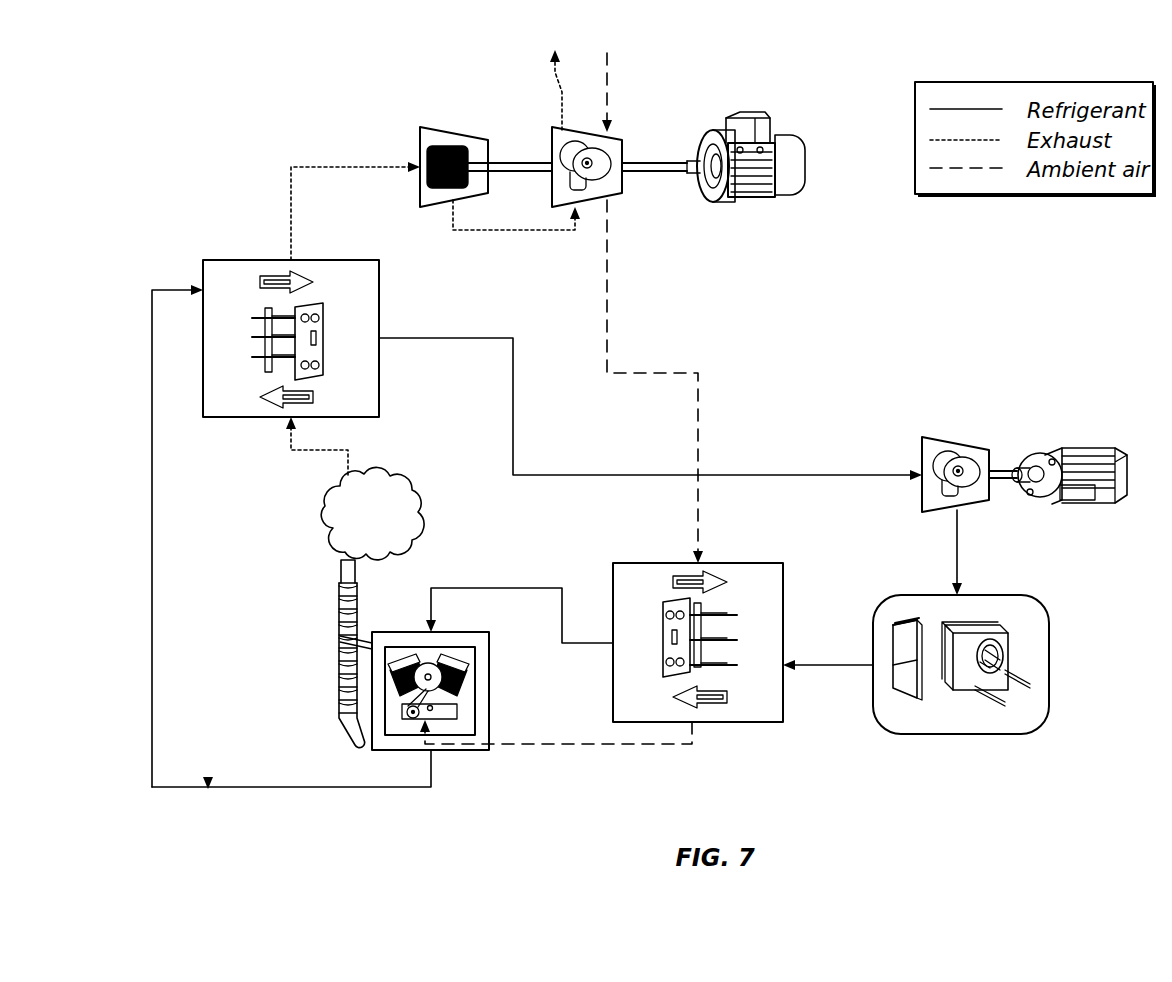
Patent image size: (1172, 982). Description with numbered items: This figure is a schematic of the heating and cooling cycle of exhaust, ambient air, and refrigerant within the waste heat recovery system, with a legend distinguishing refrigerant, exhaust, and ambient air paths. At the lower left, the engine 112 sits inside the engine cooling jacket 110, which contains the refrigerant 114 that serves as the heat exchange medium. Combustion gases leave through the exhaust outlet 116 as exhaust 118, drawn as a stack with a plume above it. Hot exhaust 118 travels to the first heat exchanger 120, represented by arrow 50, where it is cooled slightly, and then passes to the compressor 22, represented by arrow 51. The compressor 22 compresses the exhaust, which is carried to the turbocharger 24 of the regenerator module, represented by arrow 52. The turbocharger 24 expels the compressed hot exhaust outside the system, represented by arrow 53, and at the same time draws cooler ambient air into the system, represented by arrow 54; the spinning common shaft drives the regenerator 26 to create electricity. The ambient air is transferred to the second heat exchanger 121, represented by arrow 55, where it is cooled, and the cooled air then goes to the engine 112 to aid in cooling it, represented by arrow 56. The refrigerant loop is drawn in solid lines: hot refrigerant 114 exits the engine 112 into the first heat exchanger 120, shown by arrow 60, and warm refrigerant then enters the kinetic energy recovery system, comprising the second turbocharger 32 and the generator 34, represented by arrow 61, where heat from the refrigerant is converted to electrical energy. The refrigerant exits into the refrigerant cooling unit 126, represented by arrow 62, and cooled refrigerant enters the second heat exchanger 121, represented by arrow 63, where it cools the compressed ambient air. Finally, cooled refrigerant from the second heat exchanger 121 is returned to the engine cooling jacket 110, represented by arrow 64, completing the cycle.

The compressor 22 is at (428, 127).
The turbocharger 24 is at (557, 127).
The regenerator 26 is at (745, 112).
The second turbocharger 32 is at (935, 437).
The generator 34 is at (1053, 440).
The arrow 50 is at (306, 450).
The arrow 51 is at (330, 167).
The arrow 52 is at (513, 230).
The arrow 53 is at (553, 88).
The arrow 54 is at (602, 101).
The arrow 55 is at (662, 373).
The arrow 56 is at (627, 744).
The arrow 60 is at (152, 592).
The arrow 61 is at (513, 432).
The arrow 62 is at (957, 550).
The arrow 63 is at (848, 665).
The arrow 64 is at (498, 588).
The engine cooling jacket 110 is at (489, 692).
The engine 112 is at (440, 716).
The refrigerant 114 is at (208, 778).
The exhaust outlet 116 is at (337, 627).
The exhaust 118 is at (432, 508).
The first heat exchanger 120 is at (255, 260).
The second heat exchanger 121 is at (670, 563).
The refrigerant cooling unit 126 is at (932, 595).